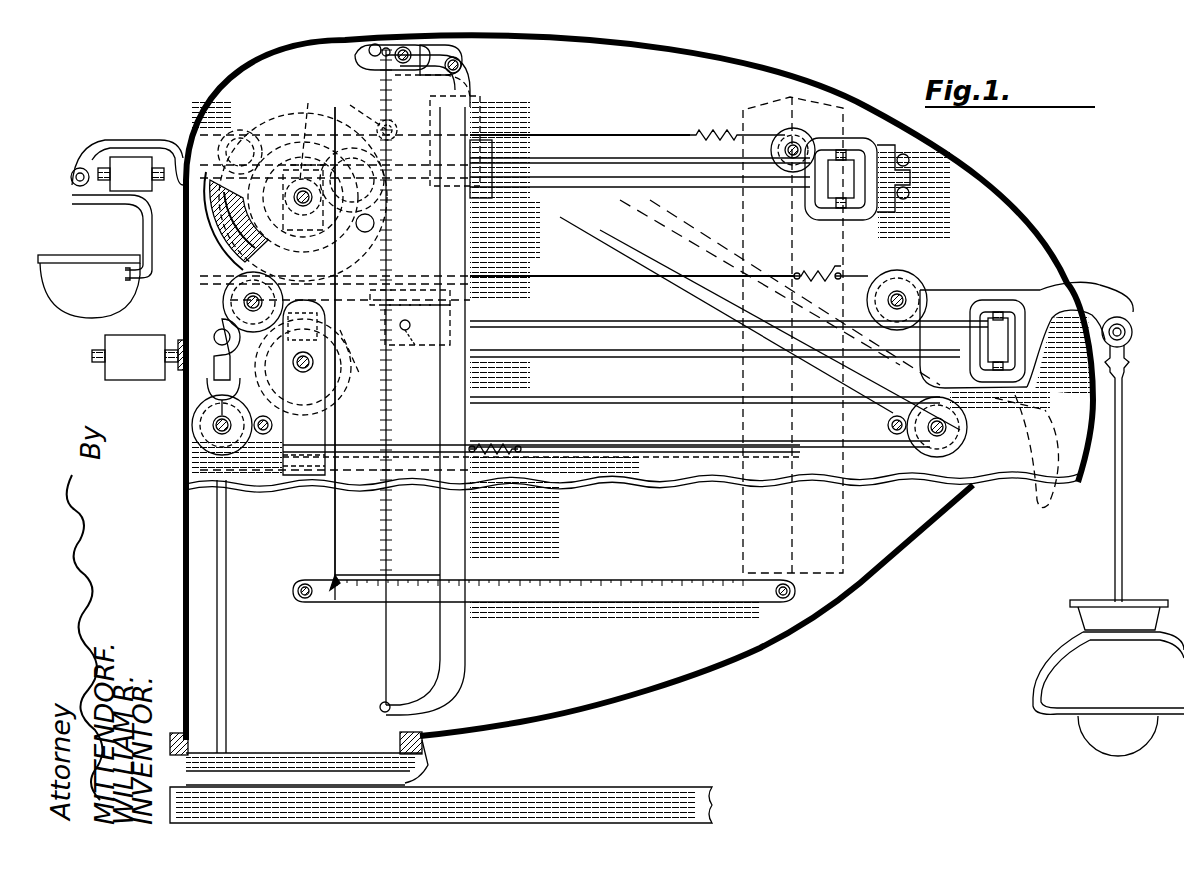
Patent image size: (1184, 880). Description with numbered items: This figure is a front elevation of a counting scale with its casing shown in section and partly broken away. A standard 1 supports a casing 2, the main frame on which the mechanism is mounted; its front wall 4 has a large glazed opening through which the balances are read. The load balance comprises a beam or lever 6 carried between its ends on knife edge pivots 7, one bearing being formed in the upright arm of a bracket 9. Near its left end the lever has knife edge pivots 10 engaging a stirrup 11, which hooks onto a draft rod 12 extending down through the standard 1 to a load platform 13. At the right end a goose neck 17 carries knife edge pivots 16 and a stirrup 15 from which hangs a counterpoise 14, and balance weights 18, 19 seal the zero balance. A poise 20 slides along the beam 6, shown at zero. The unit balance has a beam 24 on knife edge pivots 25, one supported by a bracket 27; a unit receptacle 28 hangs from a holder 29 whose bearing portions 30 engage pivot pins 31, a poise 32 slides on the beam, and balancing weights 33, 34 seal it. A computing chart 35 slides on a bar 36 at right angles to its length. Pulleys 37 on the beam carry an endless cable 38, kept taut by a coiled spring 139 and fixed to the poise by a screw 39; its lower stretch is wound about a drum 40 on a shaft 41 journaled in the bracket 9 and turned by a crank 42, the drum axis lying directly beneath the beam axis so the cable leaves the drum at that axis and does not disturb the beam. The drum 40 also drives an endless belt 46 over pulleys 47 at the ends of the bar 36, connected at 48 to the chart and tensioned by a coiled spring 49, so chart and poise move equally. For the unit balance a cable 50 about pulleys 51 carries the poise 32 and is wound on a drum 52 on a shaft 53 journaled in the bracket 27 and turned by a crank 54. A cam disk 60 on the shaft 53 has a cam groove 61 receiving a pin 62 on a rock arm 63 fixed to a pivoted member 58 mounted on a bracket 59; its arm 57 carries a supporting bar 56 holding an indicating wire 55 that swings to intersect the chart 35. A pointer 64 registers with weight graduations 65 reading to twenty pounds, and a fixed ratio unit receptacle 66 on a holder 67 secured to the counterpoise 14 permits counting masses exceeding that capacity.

The standard 1 is at (405, 777).
The casing 2 is at (695, 672).
The front wall 4 is at (372, 70).
The beam or lever 6 is at (620, 340).
The knife edge pivots 7 is at (397, 312).
The bracket 9 is at (290, 462).
The knife edge pivots 10 is at (222, 330).
The stirrup 11 is at (237, 382).
The draft rod 12 is at (222, 568).
The load platform 13 is at (478, 803).
The counterpoise 14 is at (1120, 622).
The stirrup 15 is at (1128, 352).
The knife edge pivots 16 is at (1130, 328).
The goose neck 17 is at (1095, 295).
The balance weight 18 is at (138, 368).
The balance weight 19 is at (995, 322).
The poise 20 is at (470, 292).
The lever or beam 24 is at (640, 182).
The knife edge pivots 25 is at (317, 128).
The bracket 27 is at (303, 216).
The unit receptacle 28 is at (85, 275).
The holder 29 is at (135, 204).
The bearing portions 30 is at (72, 172).
The knife edge pivot pins 31 is at (78, 180).
The poise 32 is at (483, 150).
The balancing weight 33 is at (132, 172).
The balancing weight 34 is at (860, 180).
The computing chart 35 is at (472, 505).
The bar 36 is at (592, 425).
The pulleys 37 is at (240, 282).
The cable 38 is at (565, 310).
The screw 39 is at (419, 340).
The drum 40 is at (304, 387).
The shaft 41 is at (309, 375).
The crank 42 is at (316, 378).
The endless belt or cable 46 is at (720, 430).
The pulleys 47 is at (205, 432).
The connection 48 is at (386, 450).
The coiled spring 49 is at (490, 443).
The cable 50 is at (616, 135).
The pulleys 51 is at (810, 127).
The drum 52 is at (240, 221).
The shaft 53 is at (303, 210).
The crank 54 is at (352, 202).
The wire 55 is at (386, 648).
The supporting bar 56 is at (455, 540).
The arm 57 is at (440, 62).
The pivoted member 58 is at (362, 78).
The bracket 59 is at (440, 80).
The cam disk 60 is at (272, 125).
The cam groove 61 is at (230, 240).
The pin 62 is at (372, 208).
The rock arm 63 is at (370, 109).
The pointer 64 is at (335, 582).
The weight graduations 65 is at (560, 583).
The fixed ratio unit receptacle 66 is at (1095, 730).
The holder 67 is at (1036, 683).
The coiled spring 139 is at (808, 272).